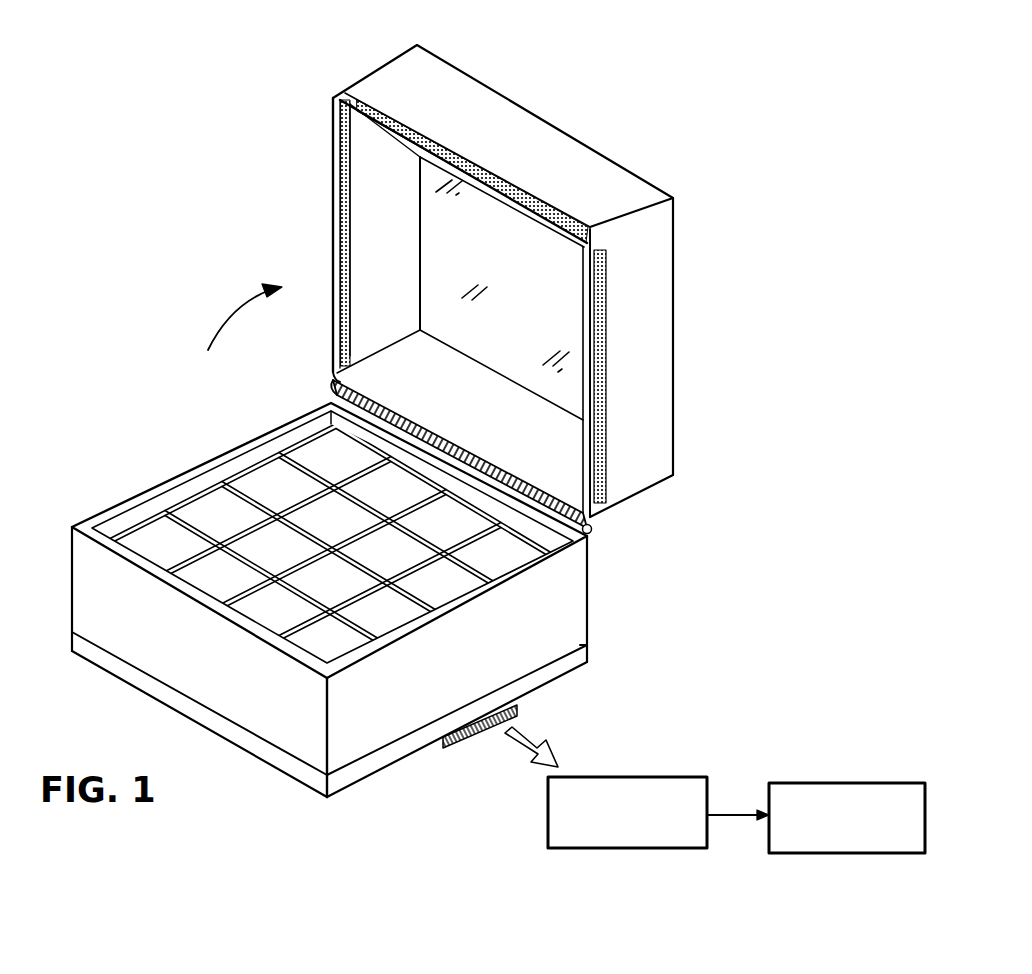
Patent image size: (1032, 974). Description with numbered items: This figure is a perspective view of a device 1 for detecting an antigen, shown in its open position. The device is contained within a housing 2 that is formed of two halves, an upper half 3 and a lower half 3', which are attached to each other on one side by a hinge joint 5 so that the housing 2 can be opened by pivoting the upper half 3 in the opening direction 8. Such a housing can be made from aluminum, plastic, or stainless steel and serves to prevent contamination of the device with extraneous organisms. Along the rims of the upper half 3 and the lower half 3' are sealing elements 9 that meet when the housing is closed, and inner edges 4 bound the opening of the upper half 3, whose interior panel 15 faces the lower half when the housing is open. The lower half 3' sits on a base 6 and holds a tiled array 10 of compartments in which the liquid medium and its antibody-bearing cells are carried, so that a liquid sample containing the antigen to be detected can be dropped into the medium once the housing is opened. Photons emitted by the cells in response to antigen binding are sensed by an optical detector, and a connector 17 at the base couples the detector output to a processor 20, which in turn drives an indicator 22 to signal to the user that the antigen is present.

The container assembly 1 is at (414, 428).
The housing 2 is at (690, 428).
The upper half 3 is at (657, 357).
The base side wall 3' is at (495, 666).
The inner rim edge 4 is at (560, 233).
The hinge 5 is at (330, 387).
The base 6 is at (242, 738).
The lid opening direction 8 is at (246, 304).
The sealing gasket 9 is at (528, 185).
The compartment tiles 10 is at (205, 512).
The lid inner panel 15 is at (497, 247).
The connector 17 is at (420, 596).
The processor 20 is at (675, 785).
The indicator 22 is at (845, 783).